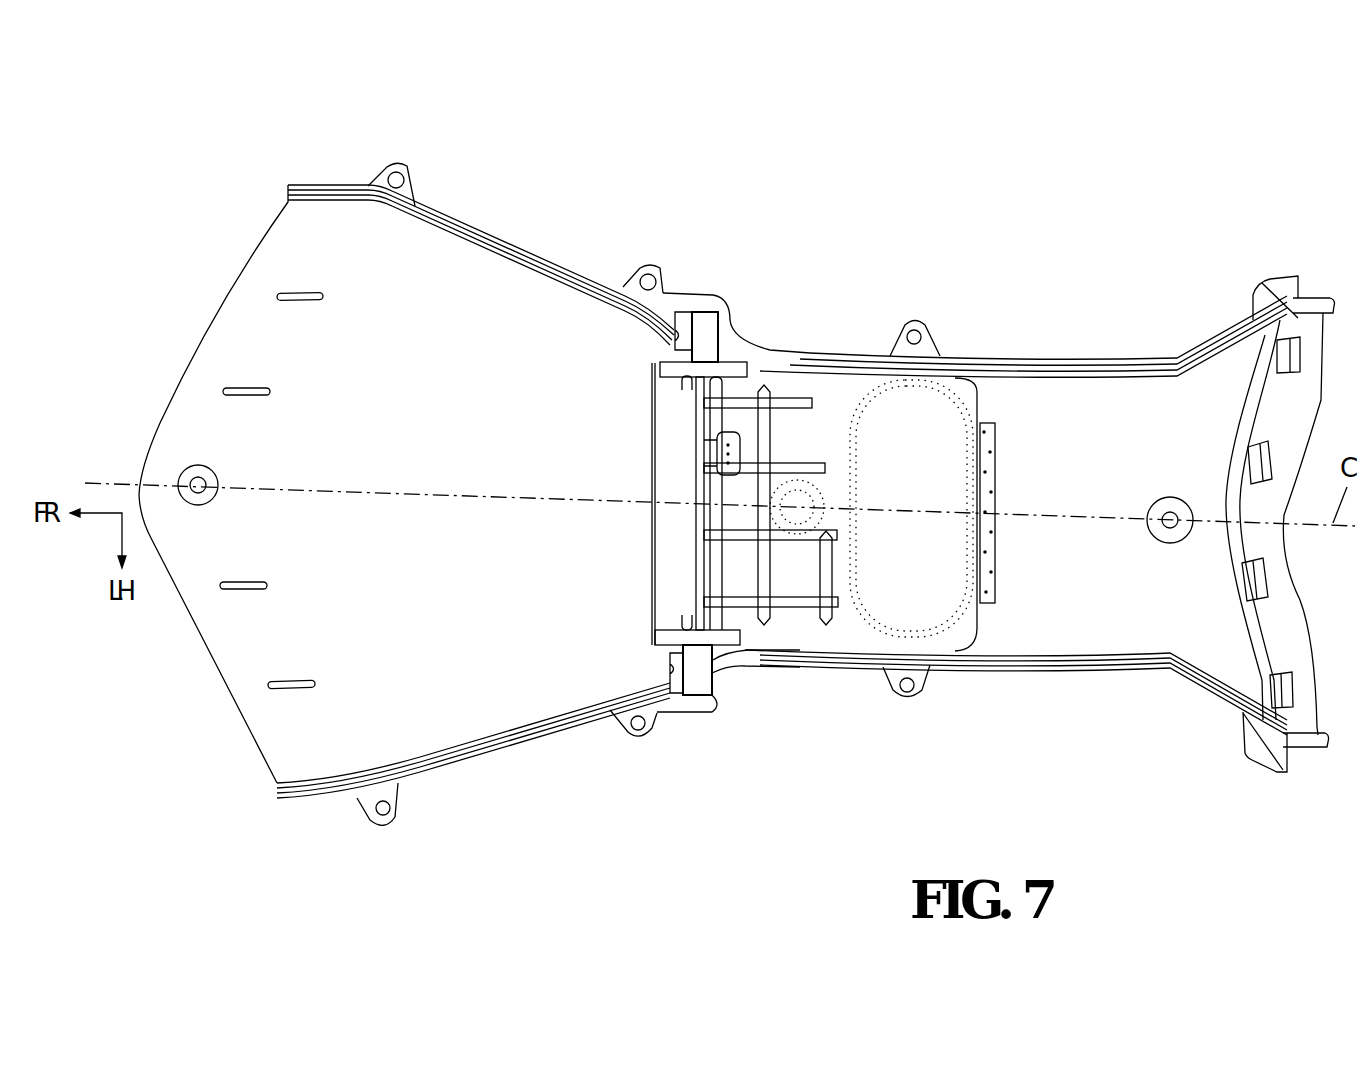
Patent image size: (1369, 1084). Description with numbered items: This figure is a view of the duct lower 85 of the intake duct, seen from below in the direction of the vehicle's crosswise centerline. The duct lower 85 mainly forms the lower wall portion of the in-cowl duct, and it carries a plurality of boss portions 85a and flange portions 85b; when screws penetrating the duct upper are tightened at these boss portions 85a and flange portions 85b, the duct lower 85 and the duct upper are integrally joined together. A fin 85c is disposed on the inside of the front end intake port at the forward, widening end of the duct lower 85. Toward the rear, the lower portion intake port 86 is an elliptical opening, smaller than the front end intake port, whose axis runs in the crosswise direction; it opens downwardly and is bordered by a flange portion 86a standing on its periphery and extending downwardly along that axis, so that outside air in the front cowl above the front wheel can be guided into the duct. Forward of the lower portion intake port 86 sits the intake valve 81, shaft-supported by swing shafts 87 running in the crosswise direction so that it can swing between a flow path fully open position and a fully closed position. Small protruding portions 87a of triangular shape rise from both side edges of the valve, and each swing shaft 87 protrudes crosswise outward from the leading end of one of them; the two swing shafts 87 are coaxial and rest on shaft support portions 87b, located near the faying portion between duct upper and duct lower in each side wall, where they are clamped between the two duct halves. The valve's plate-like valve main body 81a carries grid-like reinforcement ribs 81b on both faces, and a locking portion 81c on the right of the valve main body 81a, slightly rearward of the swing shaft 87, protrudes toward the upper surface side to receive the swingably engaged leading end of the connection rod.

The intake valve 81 is at (651, 409).
The valve main body 81a is at (650, 443).
The reinforcement ribs 81b is at (695, 560).
The locking portion 81c is at (715, 445).
The duct lower 85 is at (531, 254).
The boss portions 85a is at (212, 468).
The flange portions 85b is at (405, 160).
The fin 85c is at (270, 390).
The lower portion intake port 86 is at (883, 612).
The flange portion 86a is at (966, 652).
The swing shaft 87 is at (722, 330).
The small protruding portions 87a is at (660, 362).
The shaft support portion 87b is at (672, 340).